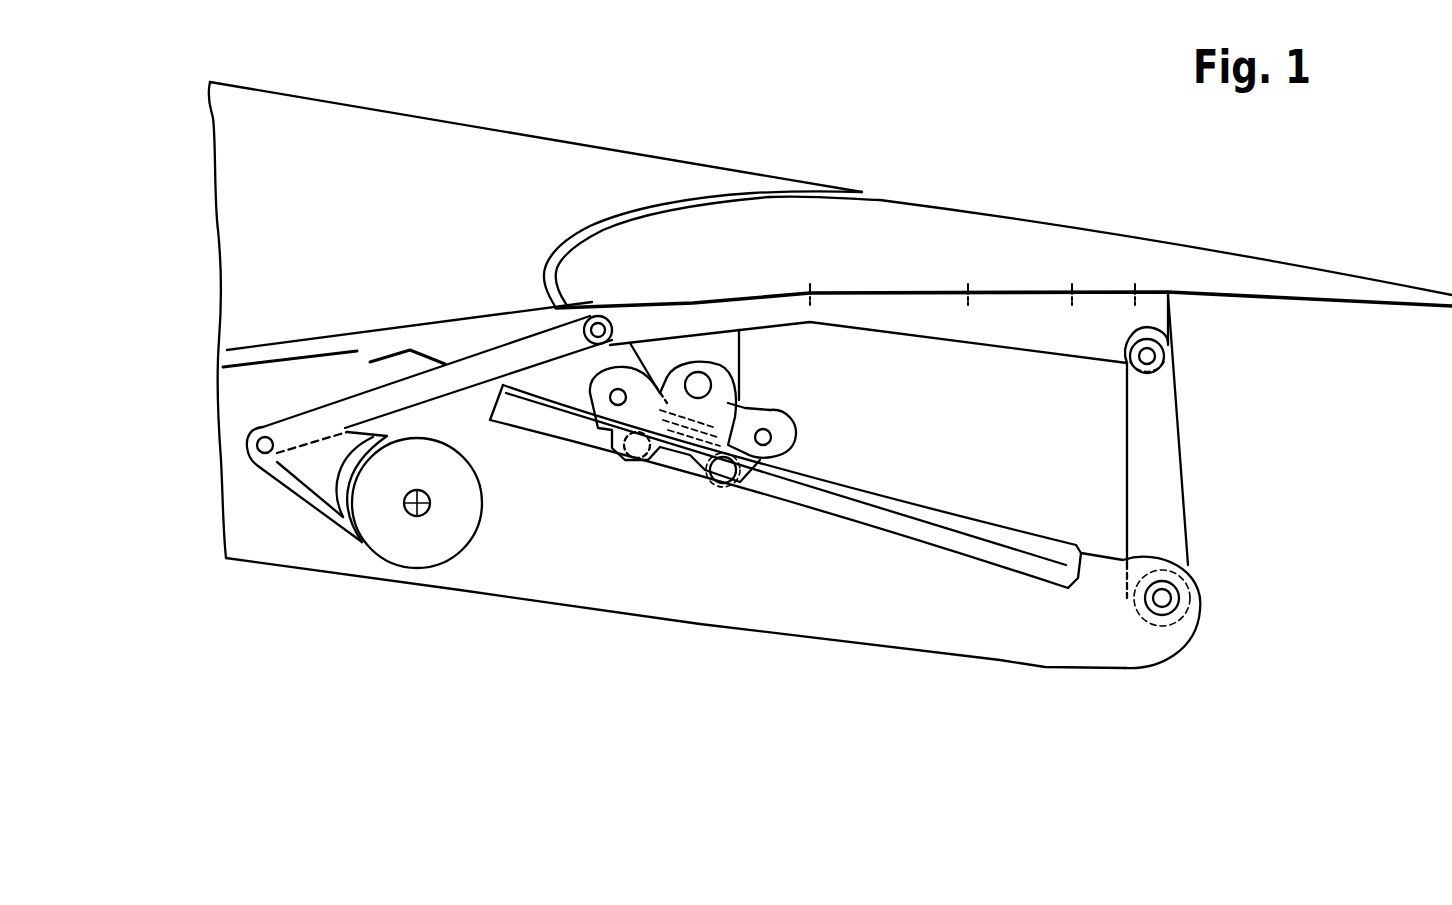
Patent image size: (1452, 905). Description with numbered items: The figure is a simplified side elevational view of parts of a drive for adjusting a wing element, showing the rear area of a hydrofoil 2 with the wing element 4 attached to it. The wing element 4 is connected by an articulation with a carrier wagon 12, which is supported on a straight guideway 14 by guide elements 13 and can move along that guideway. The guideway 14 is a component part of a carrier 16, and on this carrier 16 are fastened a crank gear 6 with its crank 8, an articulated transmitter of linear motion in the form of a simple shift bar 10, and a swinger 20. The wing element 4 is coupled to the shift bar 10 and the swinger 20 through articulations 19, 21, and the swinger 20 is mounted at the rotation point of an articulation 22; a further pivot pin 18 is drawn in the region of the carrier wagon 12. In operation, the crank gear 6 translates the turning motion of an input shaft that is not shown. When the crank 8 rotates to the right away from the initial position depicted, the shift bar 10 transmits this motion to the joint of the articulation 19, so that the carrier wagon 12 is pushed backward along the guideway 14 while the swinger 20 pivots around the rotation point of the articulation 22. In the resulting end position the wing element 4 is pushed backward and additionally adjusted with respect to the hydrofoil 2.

The hydrofoil 2 is at (267, 225).
The wing element 4 is at (917, 230).
The crank gear 6 is at (290, 523).
The crank 8 is at (332, 497).
The shift bar 10 is at (474, 373).
The carrier wagon 12 is at (770, 405).
The guide elements 13 is at (608, 463).
The guideway 14 is at (967, 538).
The carrier 16 is at (878, 603).
The pivot pin 18 is at (698, 387).
The articulation 19 is at (599, 330).
The swinger 20 is at (1158, 514).
The articulation 21 is at (1150, 356).
The articulation 22 is at (1160, 599).